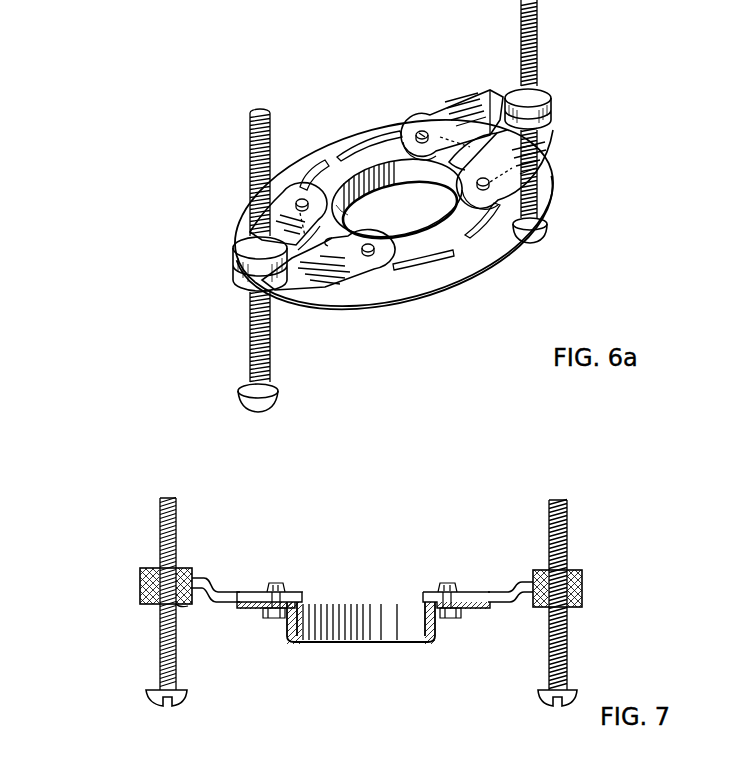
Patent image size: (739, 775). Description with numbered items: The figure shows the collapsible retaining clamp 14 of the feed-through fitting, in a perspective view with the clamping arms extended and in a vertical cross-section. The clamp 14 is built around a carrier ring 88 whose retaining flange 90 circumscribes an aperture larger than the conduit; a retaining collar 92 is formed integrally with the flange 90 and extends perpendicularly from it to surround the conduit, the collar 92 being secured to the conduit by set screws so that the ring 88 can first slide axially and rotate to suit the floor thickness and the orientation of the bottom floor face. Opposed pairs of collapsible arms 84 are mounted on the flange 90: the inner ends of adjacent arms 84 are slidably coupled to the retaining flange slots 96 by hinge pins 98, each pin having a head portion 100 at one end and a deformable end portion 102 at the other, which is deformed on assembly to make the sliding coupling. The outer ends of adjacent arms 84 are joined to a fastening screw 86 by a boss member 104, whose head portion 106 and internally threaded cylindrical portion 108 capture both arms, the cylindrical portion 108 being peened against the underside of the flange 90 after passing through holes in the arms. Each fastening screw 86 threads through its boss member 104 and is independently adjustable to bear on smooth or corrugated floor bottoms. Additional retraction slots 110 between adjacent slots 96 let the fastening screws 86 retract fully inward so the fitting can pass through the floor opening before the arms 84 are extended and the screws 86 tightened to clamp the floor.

In FIG. 7, the collapsible retaining clamp 14 is at (116, 598).
In FIG. 6a, the collapsible arm 84 is at (443, 103).
In FIG. 7, the collapsible arm 84 is at (216, 588).
In FIG. 6a, the fastening screw 86 is at (540, 200).
In FIG. 7, the fastening screw 86 is at (180, 694).
In FIG. 6a, the carrier ring 88 is at (459, 278).
In FIG. 7, the carrier ring 88 is at (431, 590).
In FIG. 6a, the retaining flange 90 is at (482, 256).
In FIG. 7, the retaining flange 90 is at (496, 590).
In FIG. 6a, the retaining collar 92 is at (406, 180).
In FIG. 7, the retaining collar 92 is at (437, 633).
In FIG. 6a, the retaining flange slot 96 is at (360, 146).
In FIG. 6a, the hinge pin 98 is at (292, 206).
In FIG. 7, the hinge pin 98 is at (457, 619).
In FIG. 7, the head portion 100 is at (270, 619).
In FIG. 6a, the deformable end portion 102 is at (422, 130).
In FIG. 7, the deformable end portion 102 is at (275, 582).
In FIG. 7, the boss member 104 is at (584, 578).
In FIG. 7, the boss head portion 106 is at (188, 578).
In FIG. 7, the internally threaded cylindrical portion 108 is at (181, 604).
In FIG. 6a, the retraction slot 110 is at (335, 206).